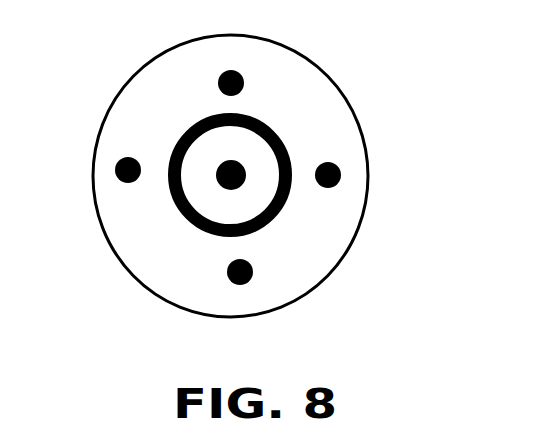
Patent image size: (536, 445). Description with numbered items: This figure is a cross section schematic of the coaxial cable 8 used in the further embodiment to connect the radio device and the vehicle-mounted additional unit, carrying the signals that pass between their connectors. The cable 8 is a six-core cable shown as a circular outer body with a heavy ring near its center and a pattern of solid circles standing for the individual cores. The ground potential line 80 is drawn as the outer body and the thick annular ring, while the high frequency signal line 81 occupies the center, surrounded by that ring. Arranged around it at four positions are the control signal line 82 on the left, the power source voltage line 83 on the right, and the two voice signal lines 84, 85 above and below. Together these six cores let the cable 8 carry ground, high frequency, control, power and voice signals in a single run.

The coaxial cable 8 is at (372, 290).
The ground potential line 80 is at (286, 147).
The high frequency signal line 81 is at (219, 182).
The control signal line 82 is at (117, 172).
The power source voltage line 83 is at (341, 177).
The voice signal line 84 is at (244, 80).
The voice signal line 85 is at (252, 281).